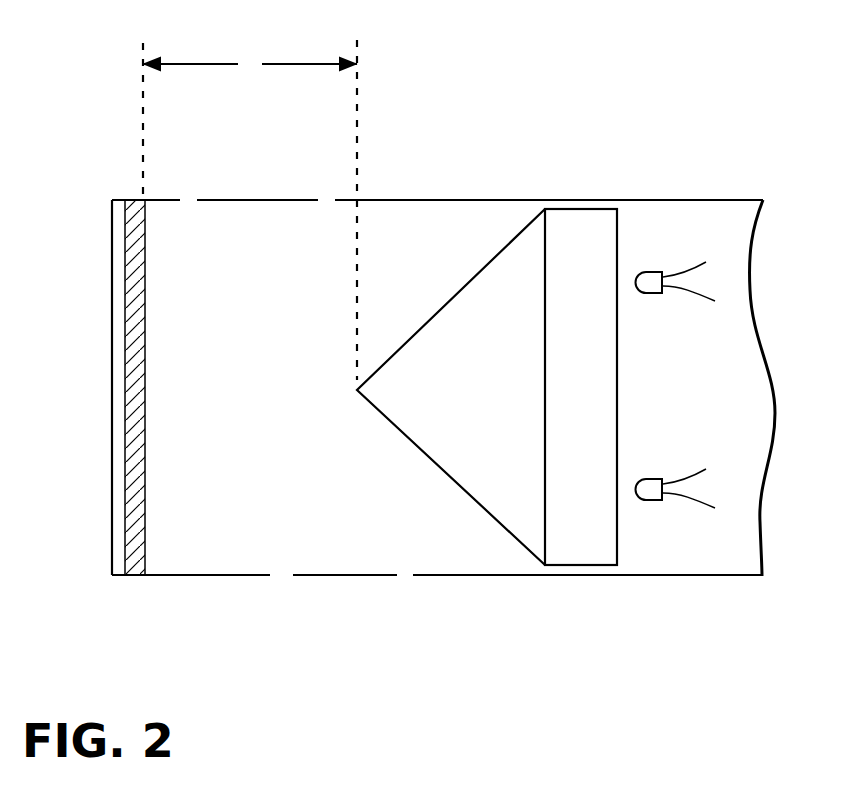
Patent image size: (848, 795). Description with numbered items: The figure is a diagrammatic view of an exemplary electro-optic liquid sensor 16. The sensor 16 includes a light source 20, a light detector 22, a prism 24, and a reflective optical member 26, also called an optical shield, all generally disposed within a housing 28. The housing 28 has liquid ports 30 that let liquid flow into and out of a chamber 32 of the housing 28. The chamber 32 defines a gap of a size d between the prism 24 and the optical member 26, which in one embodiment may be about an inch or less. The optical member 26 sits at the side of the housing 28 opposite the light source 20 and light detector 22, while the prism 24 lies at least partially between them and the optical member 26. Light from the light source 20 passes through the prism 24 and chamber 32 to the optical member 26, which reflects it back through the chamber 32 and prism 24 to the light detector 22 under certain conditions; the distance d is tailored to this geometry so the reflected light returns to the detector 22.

The electro-optic liquid sensor 16 is at (431, 117).
The light source 20 is at (649, 271).
The light detector 22 is at (651, 503).
The prism 24 is at (514, 234).
The reflective optical member 26 is at (150, 535).
The housing 28 is at (591, 200).
The liquid ports 30 is at (193, 193).
The chamber 32 is at (188, 441).